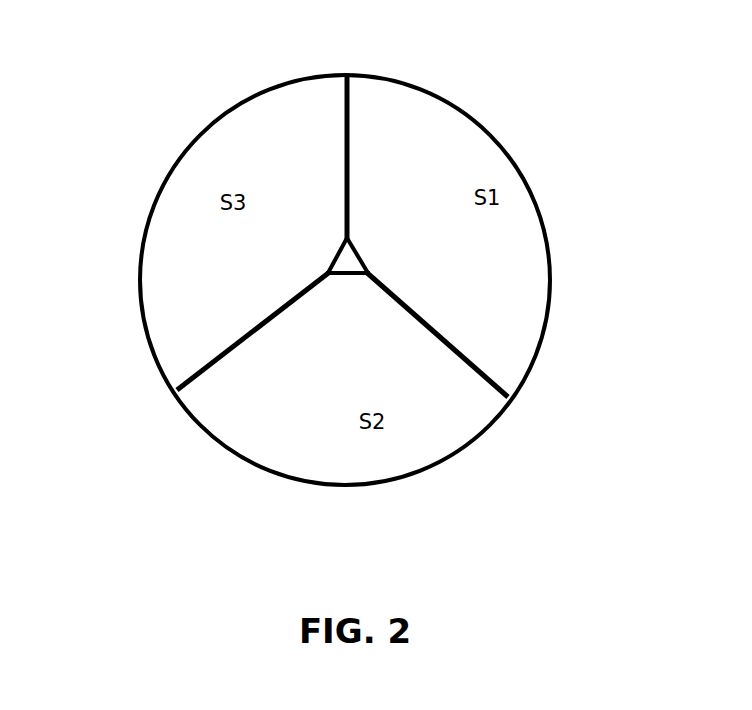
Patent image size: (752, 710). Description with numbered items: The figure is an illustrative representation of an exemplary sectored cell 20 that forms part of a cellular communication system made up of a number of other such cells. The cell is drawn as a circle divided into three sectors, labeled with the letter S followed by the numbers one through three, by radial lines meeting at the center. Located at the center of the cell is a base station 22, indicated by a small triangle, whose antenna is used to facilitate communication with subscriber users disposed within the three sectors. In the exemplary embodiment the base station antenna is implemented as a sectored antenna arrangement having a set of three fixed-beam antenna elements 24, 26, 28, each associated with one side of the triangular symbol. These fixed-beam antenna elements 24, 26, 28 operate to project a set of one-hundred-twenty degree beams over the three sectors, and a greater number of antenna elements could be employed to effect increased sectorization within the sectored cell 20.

The sectored cell 20 is at (395, 78).
The base station 22 is at (354, 281).
The fixed-beam antenna element 24 is at (360, 248).
The fixed-beam antenna element 26 is at (347, 275).
The fixed-beam antenna element 28 is at (340, 250).